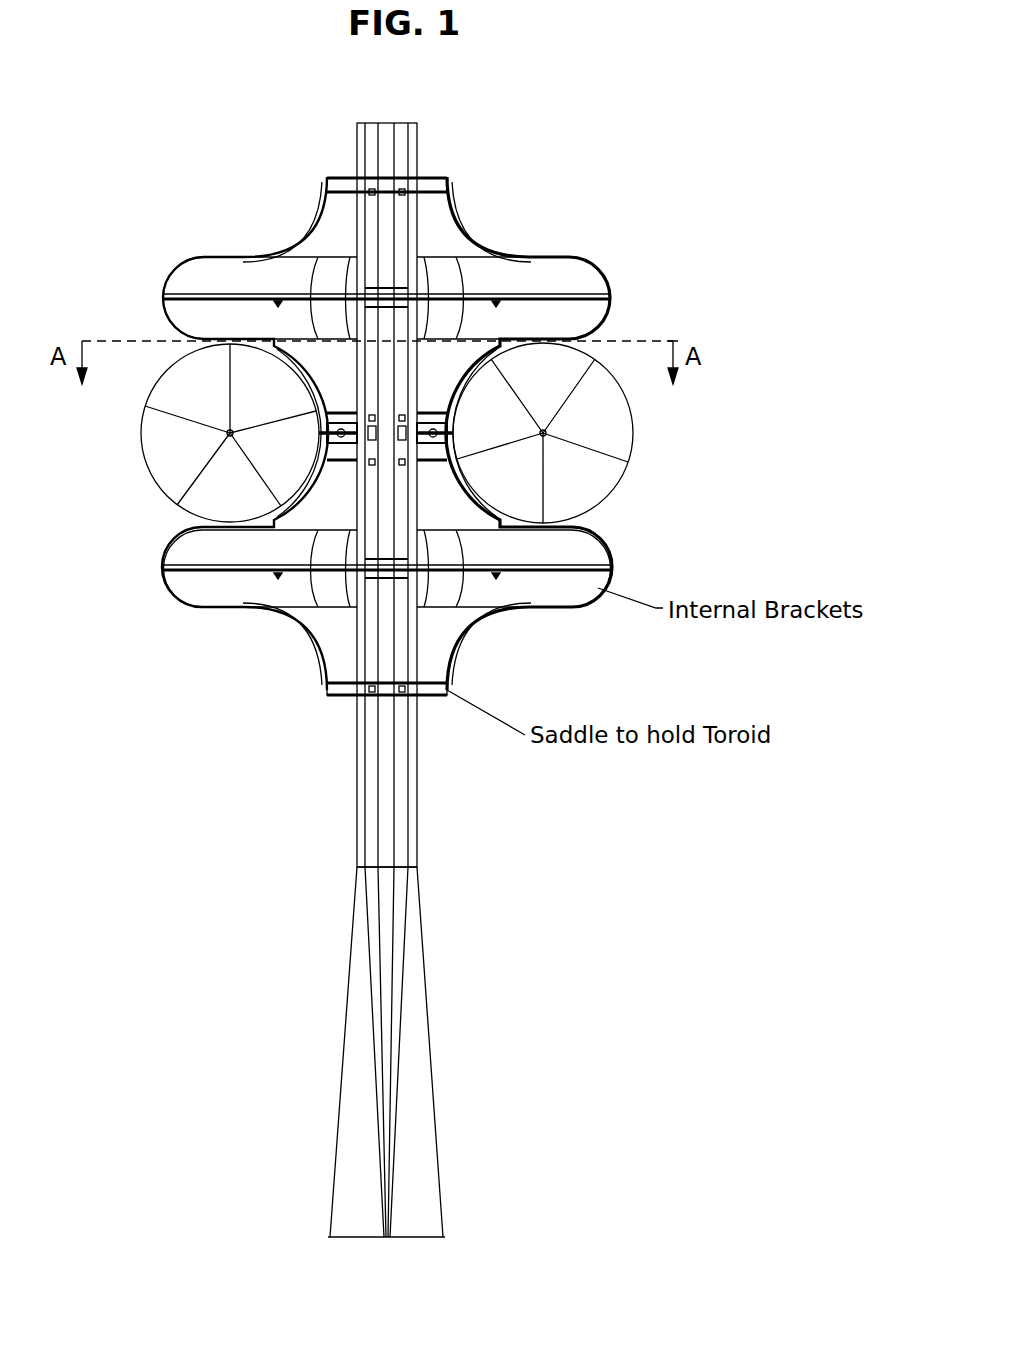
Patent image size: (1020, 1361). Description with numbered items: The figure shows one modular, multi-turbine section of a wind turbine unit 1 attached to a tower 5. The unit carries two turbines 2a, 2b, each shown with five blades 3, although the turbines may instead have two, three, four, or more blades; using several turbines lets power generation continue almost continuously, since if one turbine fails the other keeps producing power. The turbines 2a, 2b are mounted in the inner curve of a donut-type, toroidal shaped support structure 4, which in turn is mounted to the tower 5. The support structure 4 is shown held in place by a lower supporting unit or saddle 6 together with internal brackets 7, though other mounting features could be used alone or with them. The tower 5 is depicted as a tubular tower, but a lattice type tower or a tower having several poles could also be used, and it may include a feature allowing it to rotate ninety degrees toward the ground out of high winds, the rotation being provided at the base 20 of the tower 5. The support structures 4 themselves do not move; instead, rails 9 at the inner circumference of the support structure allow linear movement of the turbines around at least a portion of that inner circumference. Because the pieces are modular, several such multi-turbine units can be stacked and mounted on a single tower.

The wind turbine unit 1 is at (520, 495).
The turbine 2a is at (612, 492).
The turbine 2b is at (150, 477).
The blades 3 is at (594, 445).
The support structure 4 is at (612, 305).
The tower 5 is at (436, 1047).
The saddle 6 is at (428, 694).
The internal brackets 7 is at (496, 567).
The rails 9 is at (431, 409).
The base 20 is at (448, 1237).